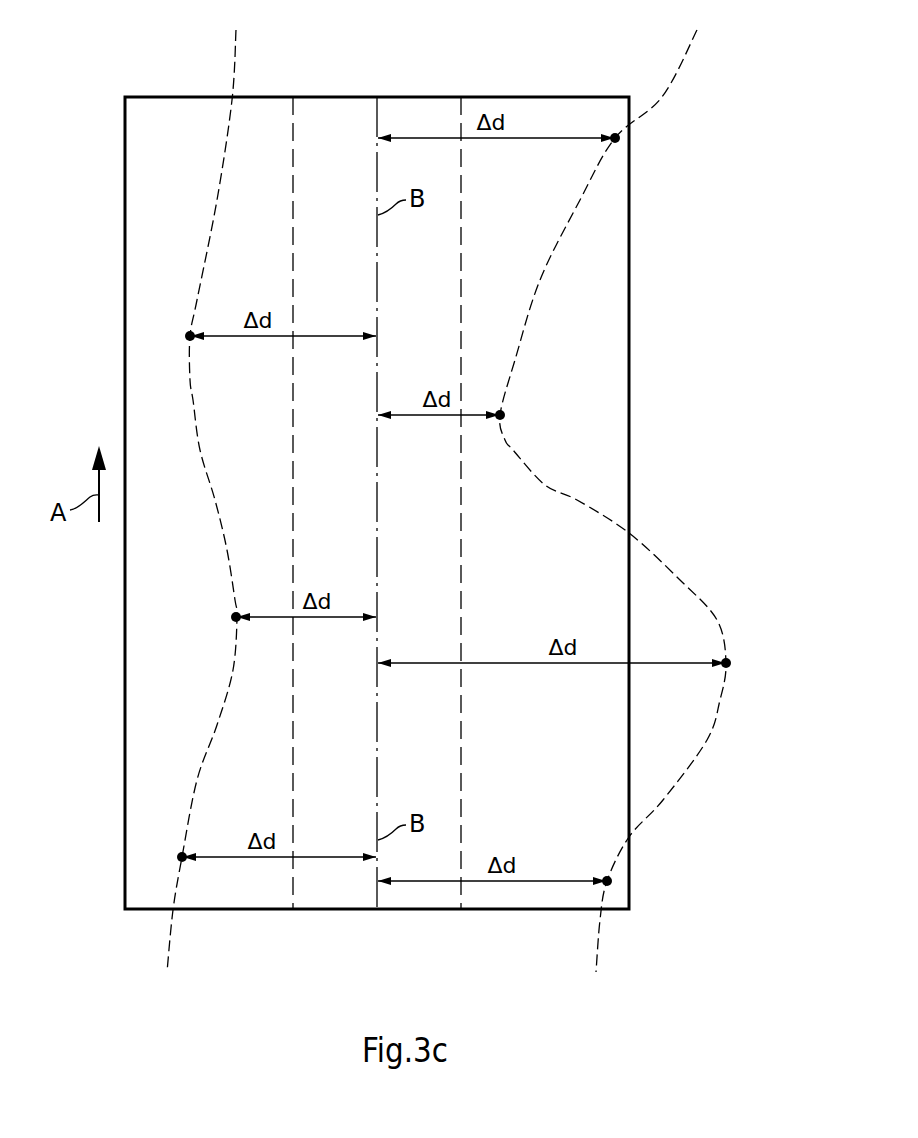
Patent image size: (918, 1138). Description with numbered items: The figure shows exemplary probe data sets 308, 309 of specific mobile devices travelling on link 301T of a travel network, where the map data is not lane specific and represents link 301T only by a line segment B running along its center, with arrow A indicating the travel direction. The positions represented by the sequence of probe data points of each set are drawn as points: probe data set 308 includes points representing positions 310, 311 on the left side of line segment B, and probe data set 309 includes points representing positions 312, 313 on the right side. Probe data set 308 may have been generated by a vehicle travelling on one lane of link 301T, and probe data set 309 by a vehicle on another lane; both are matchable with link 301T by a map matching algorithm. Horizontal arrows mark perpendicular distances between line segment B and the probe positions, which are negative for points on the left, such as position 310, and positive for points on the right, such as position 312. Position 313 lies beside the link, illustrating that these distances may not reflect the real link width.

The link in travel direction 301T is at (630, 298).
The probe data set 308 is at (218, 726).
The probe data set 309 is at (660, 563).
The position represented by probe data point 310 is at (178, 858).
The position represented by probe data point 311 is at (232, 620).
The position represented by probe data point 312 is at (612, 883).
The position represented by probe data point 313 is at (731, 665).